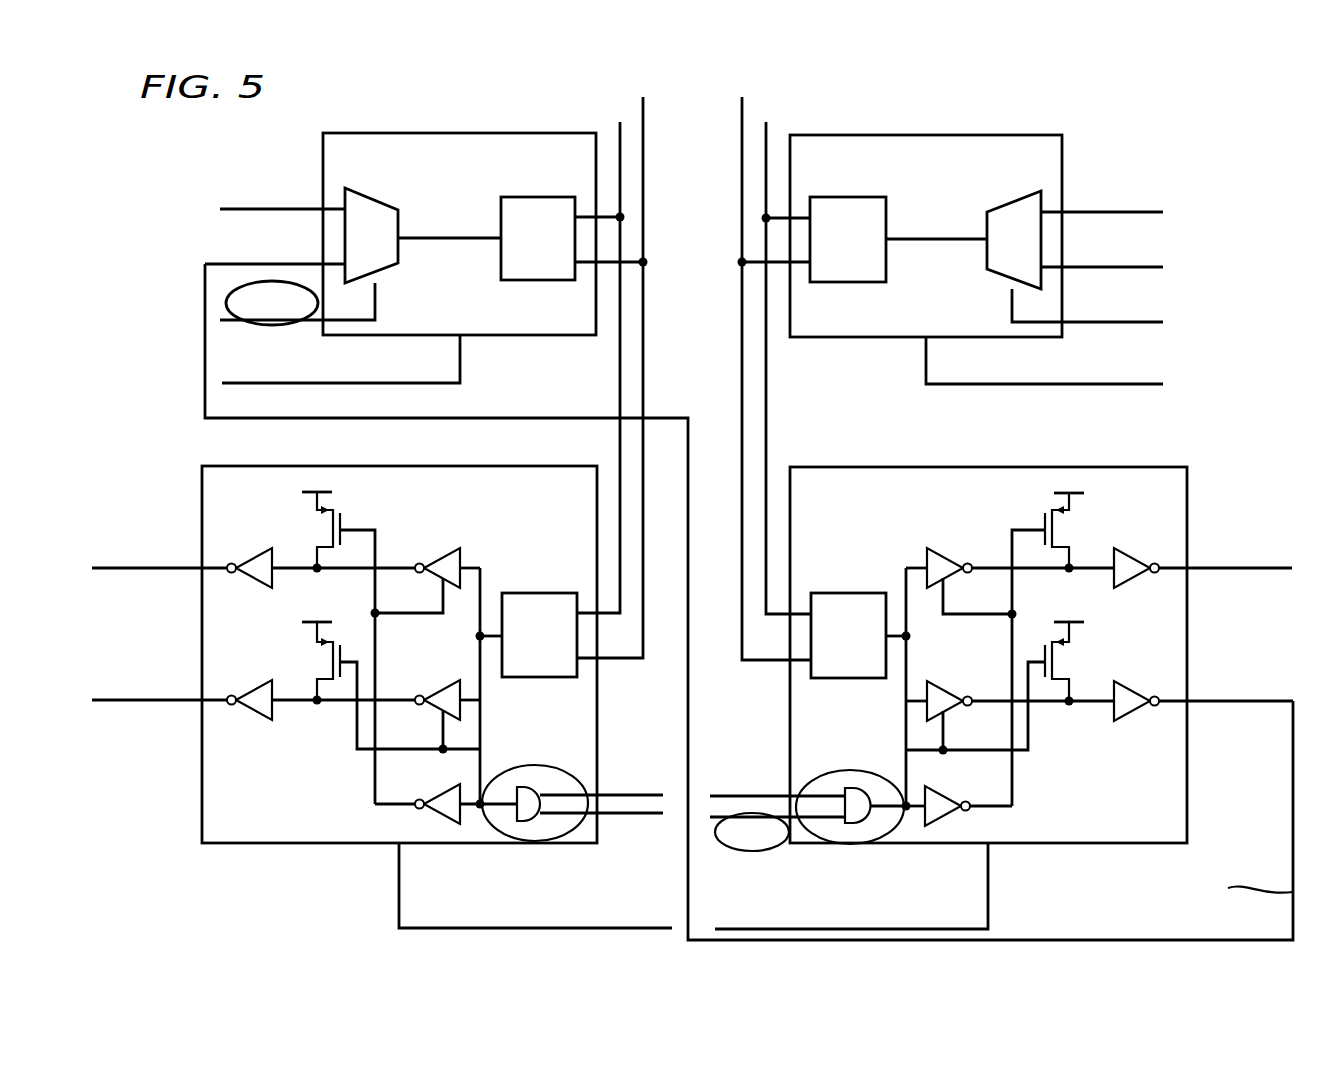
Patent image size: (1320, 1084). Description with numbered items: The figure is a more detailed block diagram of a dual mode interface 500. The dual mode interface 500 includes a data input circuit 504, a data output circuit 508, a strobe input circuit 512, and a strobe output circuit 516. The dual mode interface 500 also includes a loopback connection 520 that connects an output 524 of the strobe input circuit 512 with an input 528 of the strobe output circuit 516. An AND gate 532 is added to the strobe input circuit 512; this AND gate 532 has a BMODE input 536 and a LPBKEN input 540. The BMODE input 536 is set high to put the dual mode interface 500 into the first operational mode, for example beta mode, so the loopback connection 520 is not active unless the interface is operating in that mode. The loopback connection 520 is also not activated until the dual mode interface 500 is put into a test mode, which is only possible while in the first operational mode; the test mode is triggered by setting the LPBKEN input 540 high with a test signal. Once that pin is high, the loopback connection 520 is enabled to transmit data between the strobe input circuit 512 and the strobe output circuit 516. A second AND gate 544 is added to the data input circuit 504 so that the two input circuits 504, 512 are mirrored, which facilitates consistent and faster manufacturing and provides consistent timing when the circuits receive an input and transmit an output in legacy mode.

The dual mode interface 500 is at (1168, 110).
The data input circuit 504 is at (530, 466).
The data output circuit 508 is at (1002, 135).
The strobe input circuit 512 is at (863, 467).
The strobe output circuit 516 is at (390, 133).
The loopback connection 520 is at (663, 418).
The output of the strobe input circuit 524 is at (1222, 704).
The input of the strobe output circuit 528 is at (208, 264).
The AND gate 532 is at (847, 768).
The BMODE input 536 is at (712, 794).
The LPBKEN input 540 is at (714, 822).
The AND gate 544 is at (533, 768).